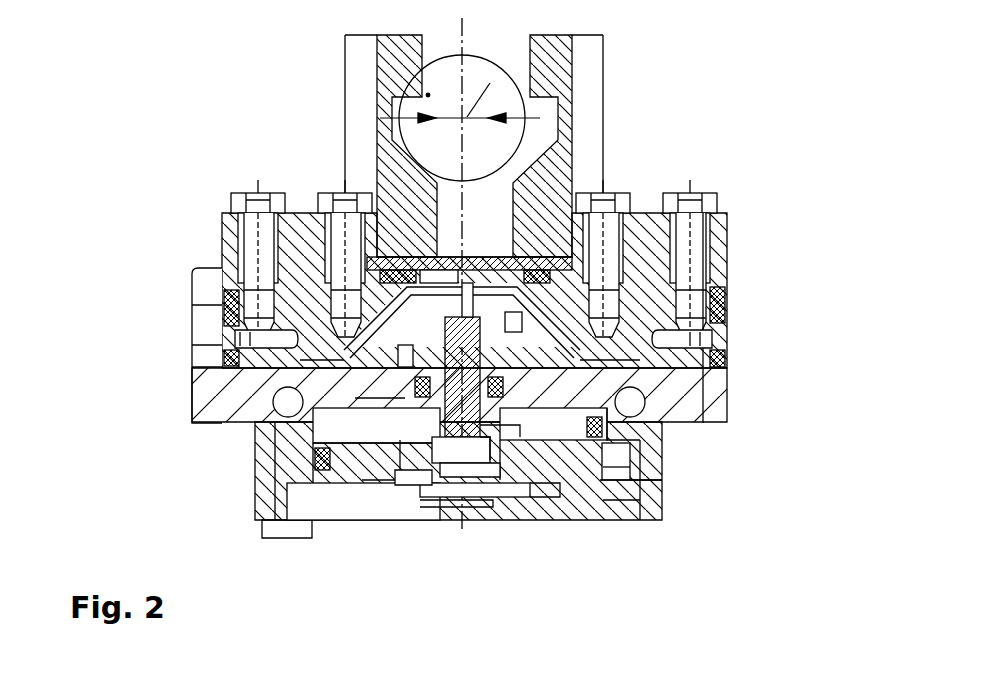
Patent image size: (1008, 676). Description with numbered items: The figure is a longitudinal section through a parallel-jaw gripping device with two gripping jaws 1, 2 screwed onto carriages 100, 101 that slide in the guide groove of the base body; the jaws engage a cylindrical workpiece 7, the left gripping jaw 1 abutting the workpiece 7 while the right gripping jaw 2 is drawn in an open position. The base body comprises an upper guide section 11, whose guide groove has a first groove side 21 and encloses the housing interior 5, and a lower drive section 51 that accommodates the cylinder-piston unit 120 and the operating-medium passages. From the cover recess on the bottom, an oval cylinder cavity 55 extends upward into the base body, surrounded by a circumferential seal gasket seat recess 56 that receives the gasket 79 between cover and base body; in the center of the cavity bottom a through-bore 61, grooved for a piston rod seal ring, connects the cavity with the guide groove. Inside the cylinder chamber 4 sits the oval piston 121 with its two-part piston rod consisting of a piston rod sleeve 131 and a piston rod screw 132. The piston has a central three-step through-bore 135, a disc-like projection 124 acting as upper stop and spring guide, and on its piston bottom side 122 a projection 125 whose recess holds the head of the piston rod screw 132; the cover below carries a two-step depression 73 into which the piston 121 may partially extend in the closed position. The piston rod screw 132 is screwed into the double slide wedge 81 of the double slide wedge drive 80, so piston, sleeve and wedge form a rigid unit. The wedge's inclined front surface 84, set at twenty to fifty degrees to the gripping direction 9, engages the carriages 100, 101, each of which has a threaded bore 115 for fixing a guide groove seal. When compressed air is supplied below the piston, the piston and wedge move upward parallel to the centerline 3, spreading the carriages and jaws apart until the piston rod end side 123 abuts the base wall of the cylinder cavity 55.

The gripping jaw 1 is at (388, 76).
The gripping jaw 2 is at (560, 75).
The centerline 3 is at (462, 158).
The housing interior 5 is at (375, 157).
The workpiece 7 is at (410, 105).
The gripping direction 9 is at (490, 83).
The guide section 11 is at (459, 401).
The first groove side 21 is at (207, 289).
The carriage 100 is at (445, 278).
The double slide wedge drive 80 is at (347, 356).
The double slide wedge 81 is at (516, 294).
The inclined front surface 84 is at (727, 302).
The carriage 101 is at (727, 325).
The threaded bore 115 is at (490, 381).
The through-bore 61 is at (505, 403).
The drive section 51 is at (188, 402).
The piston rod end side 123 is at (437, 410).
The cylinder chamber 4 is at (337, 423).
The seal gasket seat recess 56 is at (415, 440).
The cylinder-piston unit 120 is at (612, 445).
The cylinder cavity 55 is at (603, 467).
The gasket 79 is at (630, 485).
The piston rod sleeve 131 is at (365, 480).
The disc-like projection 124 is at (358, 397).
The three-step through-bore 135 is at (400, 440).
The projection 125 is at (417, 487).
The piston rod screw 132 is at (480, 460).
The two-step depression 73 is at (505, 497).
The piston 121 is at (557, 445).
The piston bottom side 122 is at (512, 430).